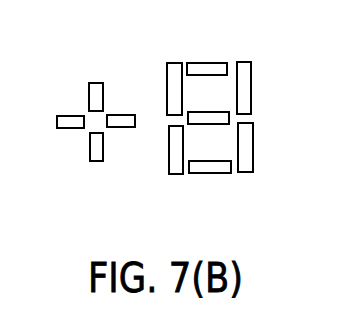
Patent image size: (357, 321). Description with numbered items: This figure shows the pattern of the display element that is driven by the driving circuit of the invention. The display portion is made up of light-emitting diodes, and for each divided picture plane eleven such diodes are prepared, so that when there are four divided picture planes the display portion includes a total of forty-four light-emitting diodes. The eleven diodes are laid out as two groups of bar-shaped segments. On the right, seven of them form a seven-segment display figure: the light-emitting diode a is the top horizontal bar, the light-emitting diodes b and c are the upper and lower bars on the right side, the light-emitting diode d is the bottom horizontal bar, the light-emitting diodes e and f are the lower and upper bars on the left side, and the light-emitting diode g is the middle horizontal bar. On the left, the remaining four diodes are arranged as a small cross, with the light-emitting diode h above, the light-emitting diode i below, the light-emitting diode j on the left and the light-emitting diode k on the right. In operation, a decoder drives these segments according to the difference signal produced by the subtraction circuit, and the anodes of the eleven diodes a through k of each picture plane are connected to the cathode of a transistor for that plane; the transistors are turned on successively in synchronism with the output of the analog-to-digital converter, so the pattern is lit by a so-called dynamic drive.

The light-emitting diode a is at (205, 63).
The light-emitting diode b is at (251, 75).
The light-emitting diode c is at (253, 143).
The light-emitting diode d is at (208, 174).
The light-emitting diode e is at (169, 158).
The light-emitting diode f is at (167, 68).
The light-emitting diode g is at (200, 112).
The light-emitting diode h is at (89, 92).
The light-emitting diode i is at (91, 161).
The light-emitting diode j is at (57, 118).
The light-emitting diode k is at (117, 115).